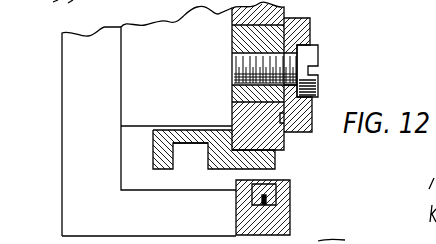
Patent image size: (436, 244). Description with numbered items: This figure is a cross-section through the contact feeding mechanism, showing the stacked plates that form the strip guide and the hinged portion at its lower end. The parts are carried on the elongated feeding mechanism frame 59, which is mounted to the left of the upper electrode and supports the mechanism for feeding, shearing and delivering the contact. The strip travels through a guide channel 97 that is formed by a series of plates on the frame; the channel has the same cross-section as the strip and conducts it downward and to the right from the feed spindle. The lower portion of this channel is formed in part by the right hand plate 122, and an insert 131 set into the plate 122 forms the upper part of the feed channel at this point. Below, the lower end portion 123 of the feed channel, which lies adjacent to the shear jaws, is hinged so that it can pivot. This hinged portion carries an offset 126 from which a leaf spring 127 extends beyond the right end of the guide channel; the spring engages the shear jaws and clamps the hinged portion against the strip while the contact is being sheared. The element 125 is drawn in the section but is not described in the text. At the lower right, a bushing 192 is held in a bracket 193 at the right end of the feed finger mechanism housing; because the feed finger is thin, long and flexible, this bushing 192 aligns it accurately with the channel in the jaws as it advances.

The feeding mechanism frame 59 is at (164, 32).
The guide channel 97 is at (252, 151).
The right hand plate 122 is at (278, 43).
The lower end portion of the feed channel 123 is at (273, 164).
The upper block 125 is at (287, 8).
The offset 126 is at (161, 138).
The leaf spring 127 is at (183, 147).
The insert 131 is at (252, 112).
The bushing 192 is at (276, 199).
The bracket 193 is at (78, 187).